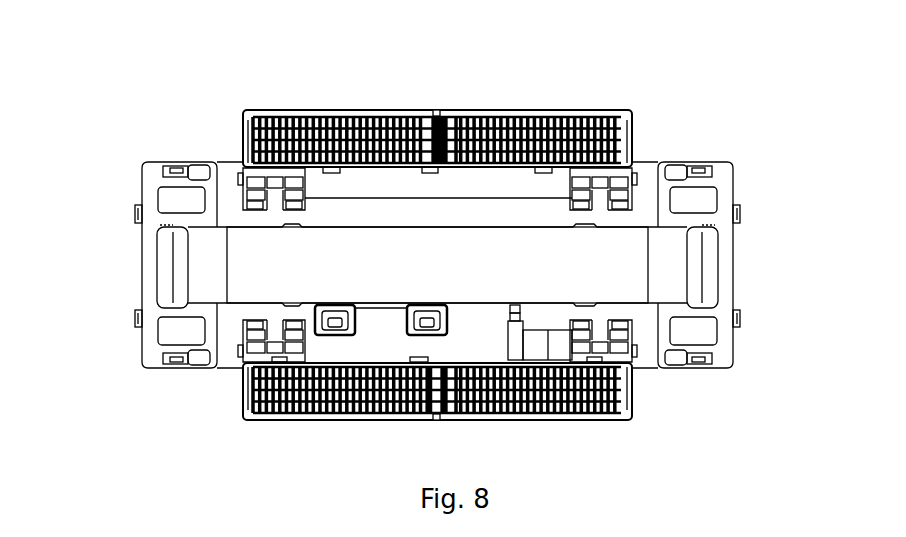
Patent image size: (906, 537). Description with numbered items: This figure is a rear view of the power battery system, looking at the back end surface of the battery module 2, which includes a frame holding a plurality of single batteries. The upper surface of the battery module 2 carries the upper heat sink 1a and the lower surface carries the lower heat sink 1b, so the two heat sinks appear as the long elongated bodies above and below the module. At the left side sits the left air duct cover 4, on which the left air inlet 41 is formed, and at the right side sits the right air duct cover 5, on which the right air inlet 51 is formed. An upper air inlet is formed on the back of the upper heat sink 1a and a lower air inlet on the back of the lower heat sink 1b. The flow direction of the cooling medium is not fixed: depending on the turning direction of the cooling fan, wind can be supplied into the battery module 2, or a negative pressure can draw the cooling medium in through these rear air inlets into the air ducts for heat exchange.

The upper heat sink 1a is at (493, 112).
The lower heat sink 1b is at (328, 418).
The battery module 2 is at (443, 267).
The left air duct cover 4 is at (720, 210).
The left air inlet 41 is at (697, 329).
The right air duct cover 5 is at (153, 181).
The right air inlet 51 is at (170, 332).